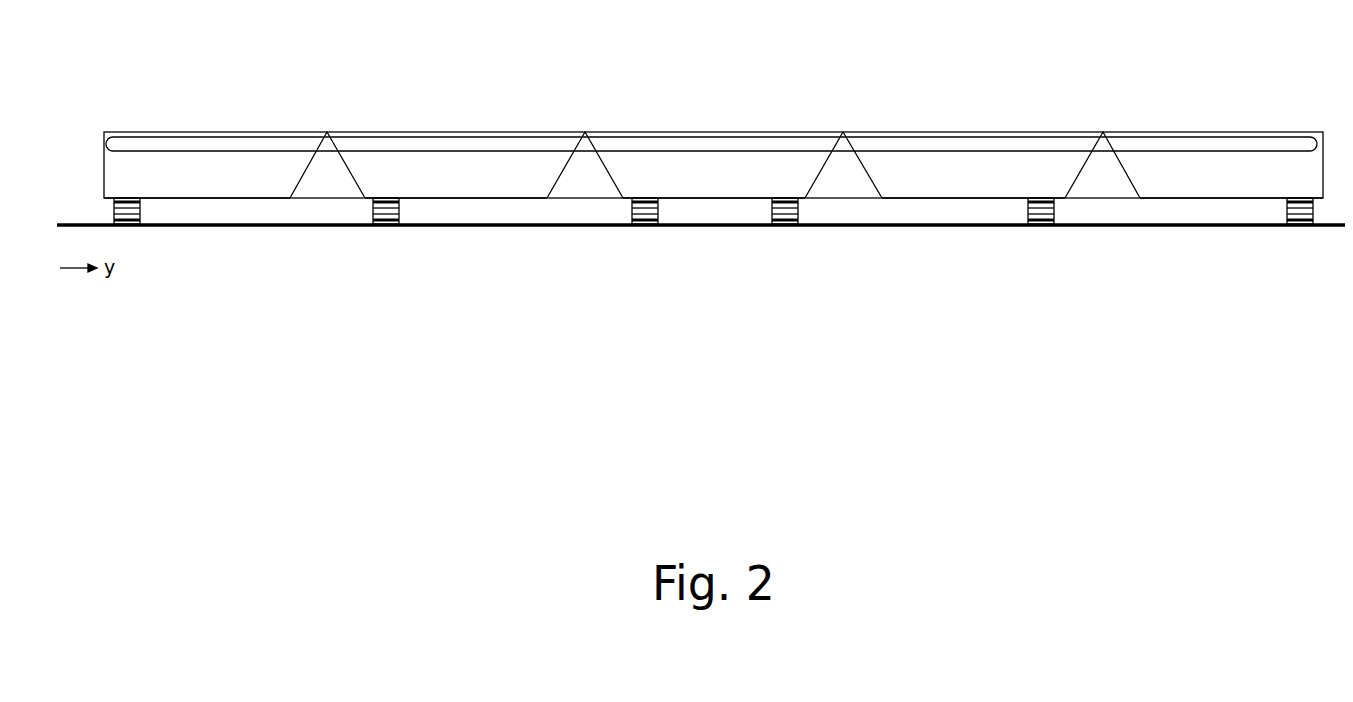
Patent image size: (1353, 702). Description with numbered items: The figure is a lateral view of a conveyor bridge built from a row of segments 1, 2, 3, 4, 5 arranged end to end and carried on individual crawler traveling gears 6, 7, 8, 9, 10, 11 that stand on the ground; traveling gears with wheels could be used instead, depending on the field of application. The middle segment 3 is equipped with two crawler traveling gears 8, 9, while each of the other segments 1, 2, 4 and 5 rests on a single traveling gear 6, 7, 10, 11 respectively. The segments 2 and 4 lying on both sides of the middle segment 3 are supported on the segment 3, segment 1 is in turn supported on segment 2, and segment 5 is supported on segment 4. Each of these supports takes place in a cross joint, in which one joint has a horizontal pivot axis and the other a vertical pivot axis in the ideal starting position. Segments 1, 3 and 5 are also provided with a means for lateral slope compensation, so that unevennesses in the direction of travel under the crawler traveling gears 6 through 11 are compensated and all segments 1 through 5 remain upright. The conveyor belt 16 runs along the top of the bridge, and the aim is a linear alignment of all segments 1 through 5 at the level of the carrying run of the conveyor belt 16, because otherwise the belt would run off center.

The segment 1 is at (1160, 162).
The segment 2 is at (902, 162).
The middle segment 3 is at (807, 162).
The segment 4 is at (526, 164).
The segment 5 is at (270, 171).
The crawler traveling gear 6 is at (1298, 227).
The crawler traveling gear 7 is at (1038, 227).
The crawler traveling gear 8 is at (783, 227).
The crawler traveling gear 9 is at (643, 227).
The crawler traveling gear 10 is at (385, 227).
The crawler traveling gear 11 is at (127, 227).
The conveyor belt 16 is at (621, 135).